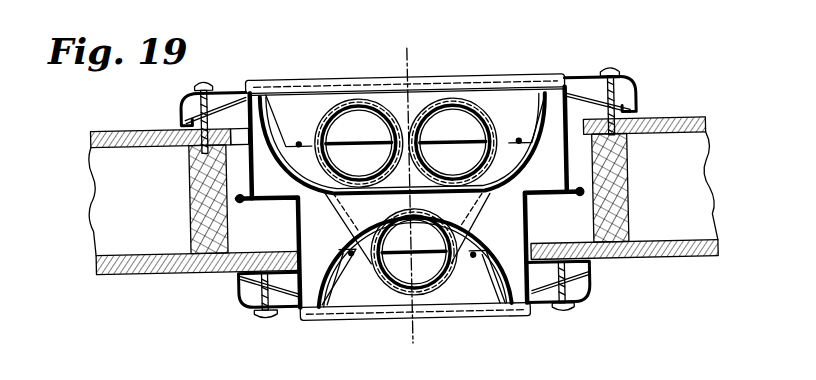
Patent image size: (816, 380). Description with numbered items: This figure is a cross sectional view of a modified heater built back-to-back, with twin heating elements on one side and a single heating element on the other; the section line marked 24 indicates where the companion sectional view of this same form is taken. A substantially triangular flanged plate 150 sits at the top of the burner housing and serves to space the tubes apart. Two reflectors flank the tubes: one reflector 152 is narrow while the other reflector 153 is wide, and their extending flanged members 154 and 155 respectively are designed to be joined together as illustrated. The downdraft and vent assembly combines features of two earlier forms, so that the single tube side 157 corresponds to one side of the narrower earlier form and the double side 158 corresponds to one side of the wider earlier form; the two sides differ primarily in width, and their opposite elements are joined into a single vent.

The section line 24- 24 is at (418, 48).
The triangular flanged plate 150 is at (477, 209).
The reflector 152 is at (328, 254).
The reflector 153 is at (298, 178).
The flanged member 154 is at (296, 220).
The flanged member 155 is at (251, 168).
The single tube side 157 is at (366, 300).
The double side 158 is at (394, 103).